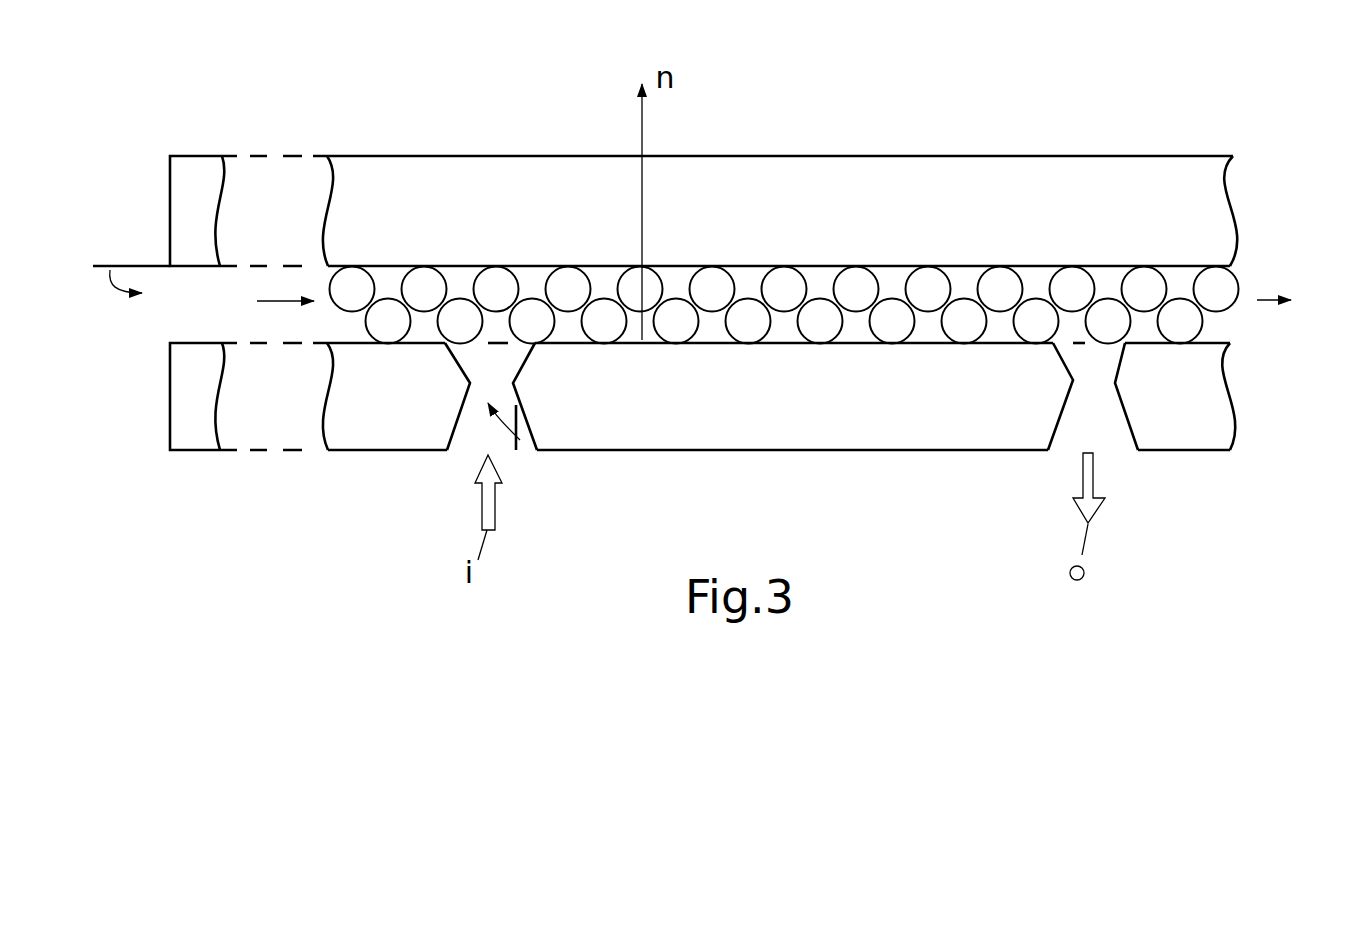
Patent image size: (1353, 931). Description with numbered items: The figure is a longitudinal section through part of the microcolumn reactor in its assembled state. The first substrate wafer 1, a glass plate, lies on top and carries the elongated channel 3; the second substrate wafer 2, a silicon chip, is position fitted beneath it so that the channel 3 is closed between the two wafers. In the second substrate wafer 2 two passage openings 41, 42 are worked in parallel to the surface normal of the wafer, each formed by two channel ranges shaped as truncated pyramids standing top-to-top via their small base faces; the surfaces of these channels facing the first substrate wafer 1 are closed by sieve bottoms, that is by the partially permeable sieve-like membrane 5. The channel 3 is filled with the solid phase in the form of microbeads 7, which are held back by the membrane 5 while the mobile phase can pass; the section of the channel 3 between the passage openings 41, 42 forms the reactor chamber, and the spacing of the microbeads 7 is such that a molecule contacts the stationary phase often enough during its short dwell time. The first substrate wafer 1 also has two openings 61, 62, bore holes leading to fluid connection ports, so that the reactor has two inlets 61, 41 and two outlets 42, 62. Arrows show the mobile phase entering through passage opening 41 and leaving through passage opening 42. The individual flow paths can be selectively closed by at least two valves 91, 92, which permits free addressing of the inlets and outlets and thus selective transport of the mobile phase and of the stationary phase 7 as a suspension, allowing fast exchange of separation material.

The first substrate wafer 1 is at (873, 195).
The second substrate wafer 2 is at (957, 402).
The channel 3 is at (1252, 281).
The partially permeable sieve-like membrane 5 is at (498, 345).
The microbeads and/or cells 7 is at (893, 313).
The passage opening 41 is at (475, 413).
The passage opening 42 is at (1072, 420).
The opening 61 is at (263, 302).
The opening 62 is at (1297, 301).
The valve 91 is at (130, 262).
The valve 92 is at (520, 440).